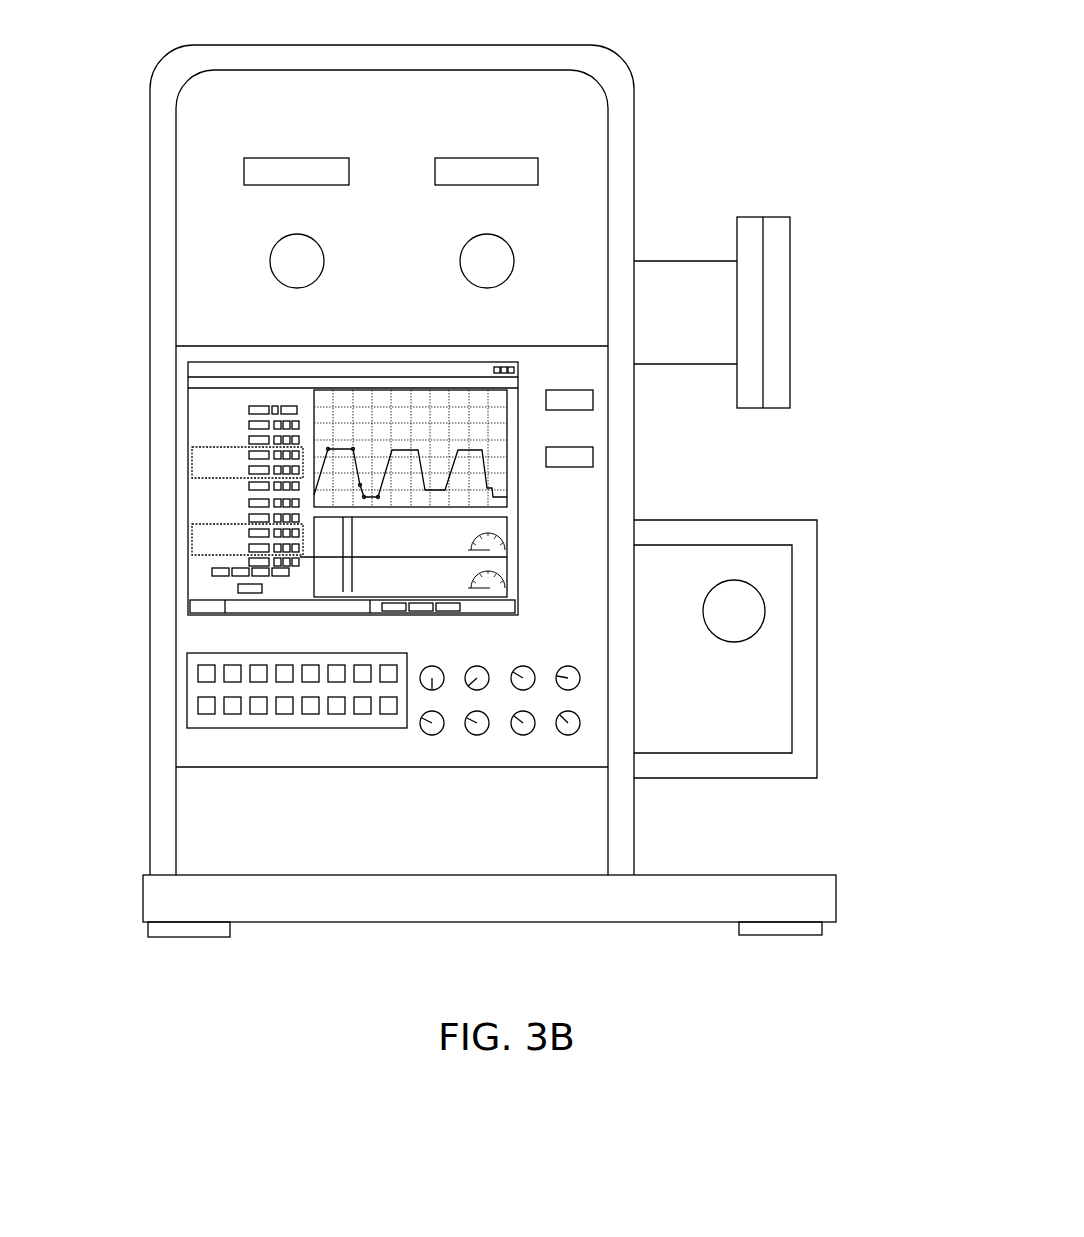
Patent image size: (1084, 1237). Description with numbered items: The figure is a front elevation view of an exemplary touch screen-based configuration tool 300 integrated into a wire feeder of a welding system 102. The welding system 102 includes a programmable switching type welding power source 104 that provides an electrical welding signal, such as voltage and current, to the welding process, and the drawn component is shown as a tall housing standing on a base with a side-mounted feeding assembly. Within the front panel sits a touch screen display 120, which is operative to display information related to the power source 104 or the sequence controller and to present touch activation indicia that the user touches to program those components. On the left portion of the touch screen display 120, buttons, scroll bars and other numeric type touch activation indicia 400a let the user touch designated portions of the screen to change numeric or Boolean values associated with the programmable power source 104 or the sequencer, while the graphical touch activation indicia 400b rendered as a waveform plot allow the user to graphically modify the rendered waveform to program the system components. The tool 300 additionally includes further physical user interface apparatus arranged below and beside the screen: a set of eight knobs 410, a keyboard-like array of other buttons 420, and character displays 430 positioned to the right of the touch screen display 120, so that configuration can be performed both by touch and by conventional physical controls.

The welding system 102 is at (772, 45).
The welding power source 104 is at (322, 45).
The touch screen display 120 is at (380, 482).
The touch screen-based welding system configuration tool 300 is at (655, 456).
The numeric type touch activation indicia 400a is at (285, 571).
The graphical touch activation indicia 400b is at (365, 451).
The knobs 410 is at (488, 655).
The buttons 420 is at (291, 729).
The character displays 430 is at (578, 375).